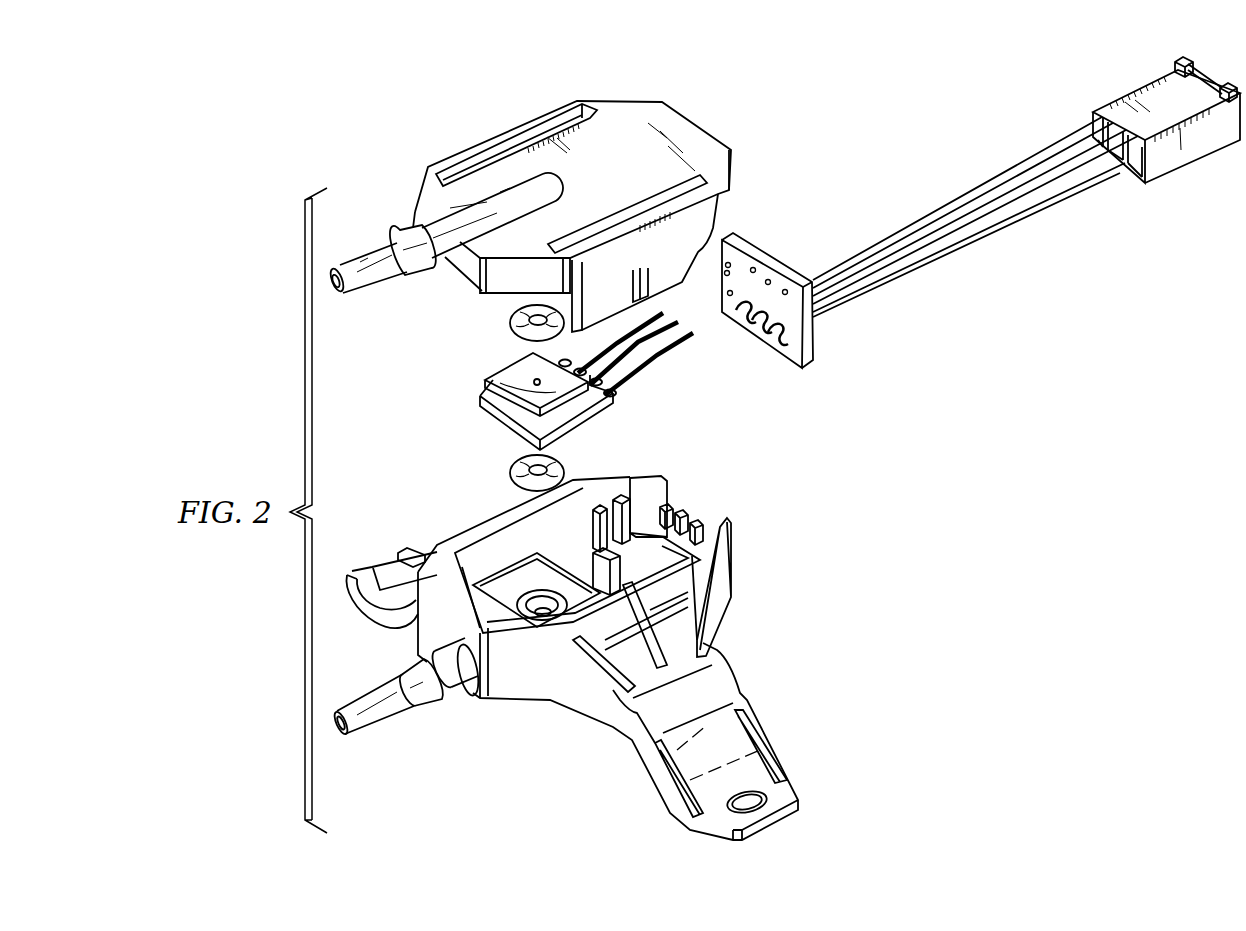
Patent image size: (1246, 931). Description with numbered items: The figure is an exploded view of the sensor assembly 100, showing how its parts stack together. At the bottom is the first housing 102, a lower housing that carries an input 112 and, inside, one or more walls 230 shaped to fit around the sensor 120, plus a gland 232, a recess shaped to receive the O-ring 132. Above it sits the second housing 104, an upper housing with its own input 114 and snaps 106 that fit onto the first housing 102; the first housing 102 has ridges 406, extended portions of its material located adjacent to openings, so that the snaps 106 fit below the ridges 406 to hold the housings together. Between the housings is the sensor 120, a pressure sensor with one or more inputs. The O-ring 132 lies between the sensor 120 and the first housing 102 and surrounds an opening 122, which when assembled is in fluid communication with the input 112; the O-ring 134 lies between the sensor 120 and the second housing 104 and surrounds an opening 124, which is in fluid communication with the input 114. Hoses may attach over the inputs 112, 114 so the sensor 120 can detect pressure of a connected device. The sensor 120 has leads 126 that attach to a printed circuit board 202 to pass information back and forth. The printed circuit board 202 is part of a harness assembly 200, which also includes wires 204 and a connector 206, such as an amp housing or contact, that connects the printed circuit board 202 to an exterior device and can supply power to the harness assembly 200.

The sensor assembly 100 is at (394, 140).
The first housing 102 is at (730, 668).
The second housing 104 is at (688, 132).
The snaps 106 is at (597, 322).
The input 112 is at (381, 719).
The input 114 is at (370, 276).
The sensor 120 is at (485, 407).
The opening 122 is at (486, 445).
The opening 124 is at (537, 380).
The leads 126 is at (676, 368).
The O-ring 132 is at (512, 474).
The O-ring 134 is at (512, 325).
The harness assembly 200 is at (1013, 252).
The printed circuit board 202 is at (762, 251).
The wires 204 is at (948, 185).
The connector 206 is at (1122, 110).
The walls 230 is at (487, 596).
The gland 232 is at (538, 598).
The ridges 406 is at (617, 653).